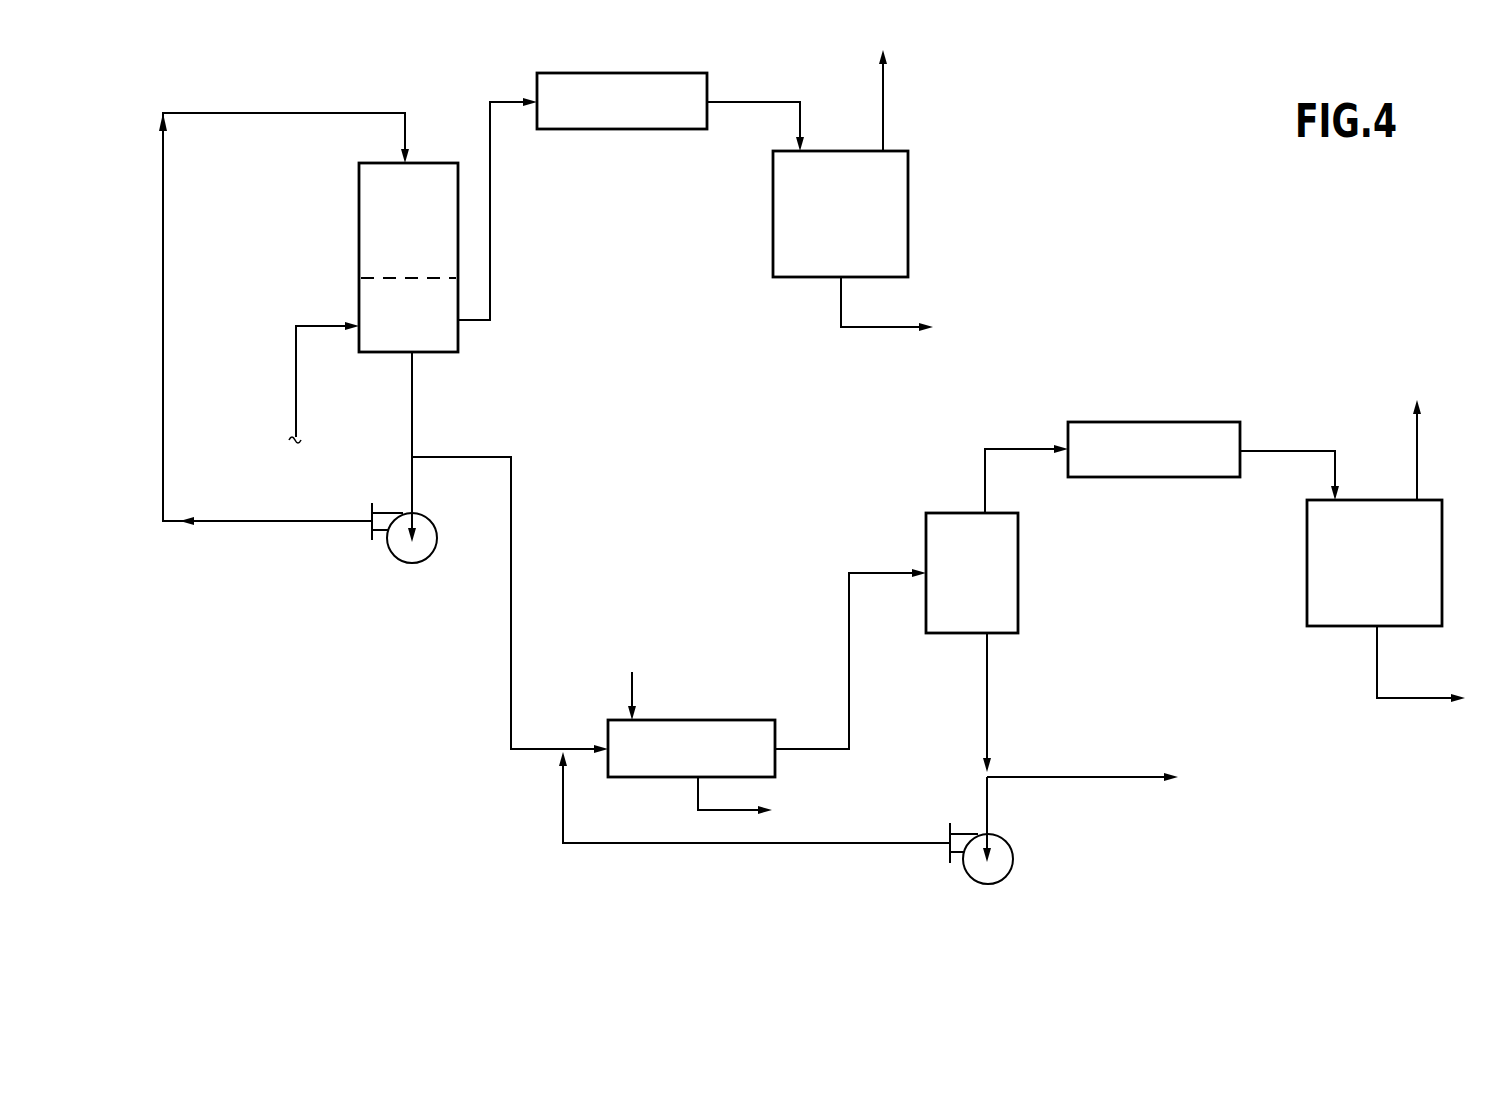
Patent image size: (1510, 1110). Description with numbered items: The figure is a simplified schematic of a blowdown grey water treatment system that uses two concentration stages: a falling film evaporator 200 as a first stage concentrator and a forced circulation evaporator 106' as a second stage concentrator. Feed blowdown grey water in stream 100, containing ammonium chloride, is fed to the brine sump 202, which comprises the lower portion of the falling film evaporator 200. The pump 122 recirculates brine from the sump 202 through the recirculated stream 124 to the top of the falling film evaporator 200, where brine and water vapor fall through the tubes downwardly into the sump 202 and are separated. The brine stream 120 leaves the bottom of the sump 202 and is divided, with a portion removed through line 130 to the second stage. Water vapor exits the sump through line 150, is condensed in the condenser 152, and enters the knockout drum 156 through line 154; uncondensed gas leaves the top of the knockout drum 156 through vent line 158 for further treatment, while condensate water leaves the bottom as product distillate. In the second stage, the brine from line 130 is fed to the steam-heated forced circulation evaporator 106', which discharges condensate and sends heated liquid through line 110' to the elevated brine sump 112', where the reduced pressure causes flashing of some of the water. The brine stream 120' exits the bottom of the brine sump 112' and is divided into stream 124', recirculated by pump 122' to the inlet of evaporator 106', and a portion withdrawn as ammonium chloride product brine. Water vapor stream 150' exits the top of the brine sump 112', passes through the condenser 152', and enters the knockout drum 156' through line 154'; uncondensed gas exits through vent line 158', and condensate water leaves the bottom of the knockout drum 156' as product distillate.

The blowdown grey water stream 100 is at (296, 387).
The brine stream 120 is at (452, 447).
The pump 122 is at (382, 557).
The recirculated brine stream 124 is at (284, 341).
The line 130 is at (511, 633).
The water vapor stream 150 is at (518, 209).
The condenser 152 is at (622, 101).
The line 154 is at (773, 108).
The knockout drum 156 is at (975, 245).
The vent line 158 is at (922, 100).
The falling film evaporator 200 is at (389, 238).
The brine sump 202 is at (377, 305).
The forced circulation steam-heated evaporator 106' is at (762, 730).
The line 110' is at (841, 659).
The elevated brine sump 112' is at (972, 573).
The brine stream 120' is at (1084, 747).
The pump 122' is at (960, 877).
The recirculated brine stream 124' is at (754, 819).
The water vapor stream 150' is at (980, 479).
The condenser 152' is at (1154, 449).
The line 154' is at (1308, 458).
The knockout drum 156' is at (1402, 636).
The vent line 158' is at (1458, 450).